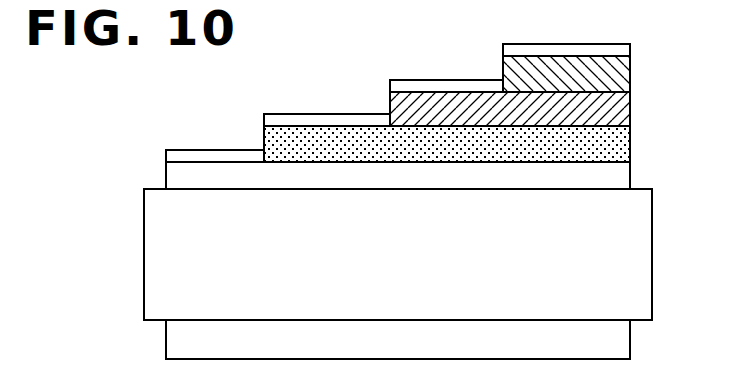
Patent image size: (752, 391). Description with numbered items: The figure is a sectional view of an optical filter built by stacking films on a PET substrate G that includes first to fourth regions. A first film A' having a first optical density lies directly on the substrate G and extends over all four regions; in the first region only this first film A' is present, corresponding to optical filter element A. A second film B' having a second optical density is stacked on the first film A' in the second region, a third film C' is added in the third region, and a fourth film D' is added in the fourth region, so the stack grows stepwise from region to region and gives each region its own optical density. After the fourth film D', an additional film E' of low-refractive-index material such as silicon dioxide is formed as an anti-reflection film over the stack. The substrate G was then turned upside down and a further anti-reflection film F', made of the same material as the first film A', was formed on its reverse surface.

The anti-reflection film E' is at (603, 46).
The fourth film D' is at (605, 74).
The third film C' is at (547, 103).
The second film B' is at (484, 138).
The first film A' is at (434, 169).
The PET substrate G is at (646, 258).
The anti-reflection film F' is at (434, 339).